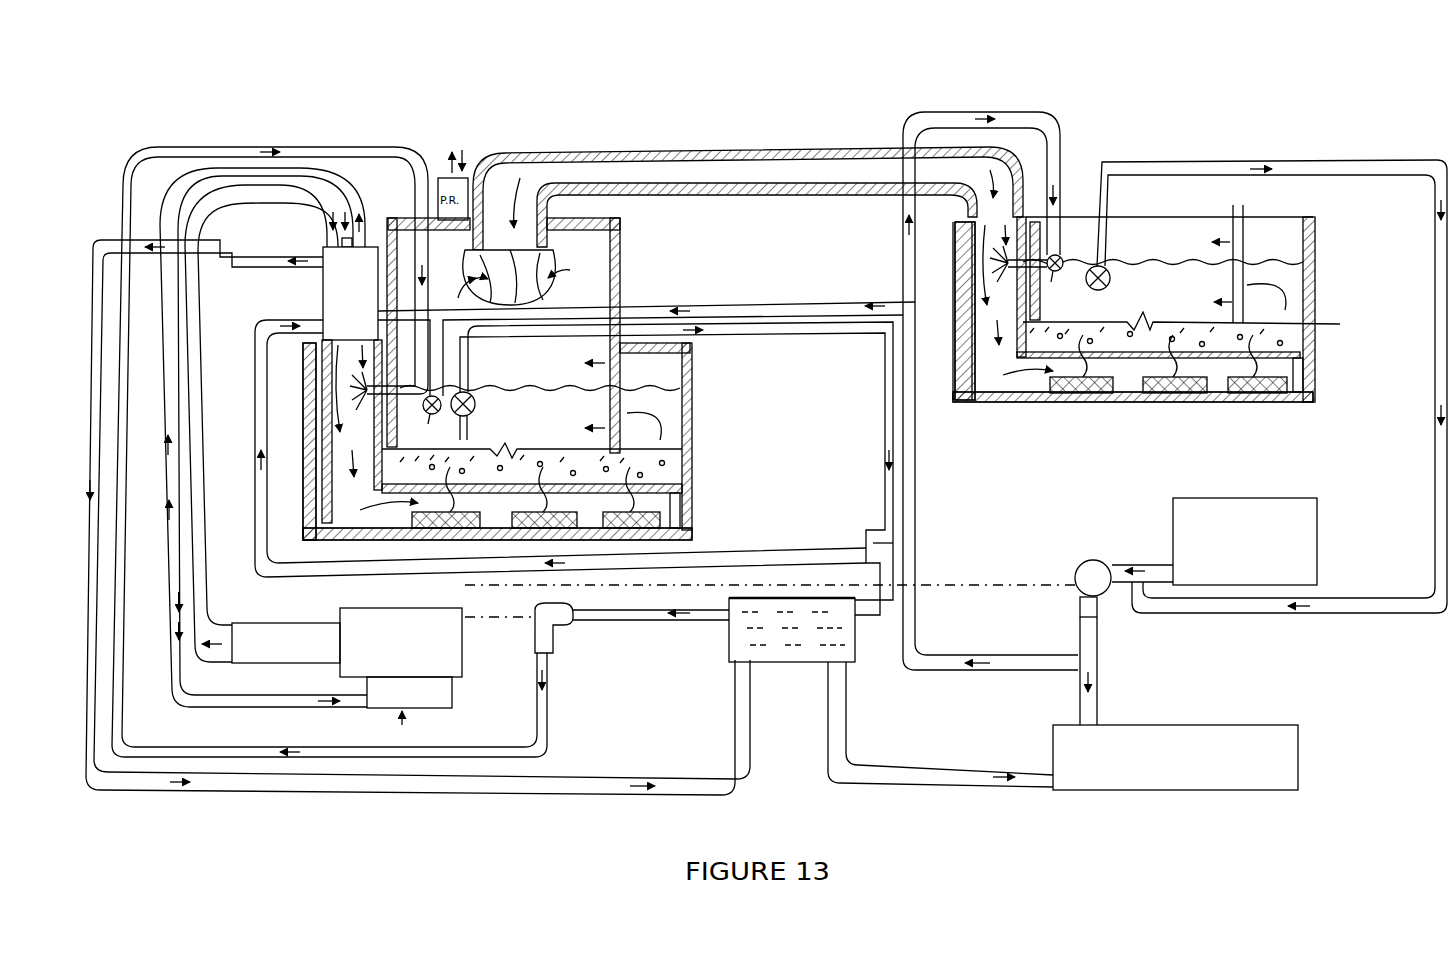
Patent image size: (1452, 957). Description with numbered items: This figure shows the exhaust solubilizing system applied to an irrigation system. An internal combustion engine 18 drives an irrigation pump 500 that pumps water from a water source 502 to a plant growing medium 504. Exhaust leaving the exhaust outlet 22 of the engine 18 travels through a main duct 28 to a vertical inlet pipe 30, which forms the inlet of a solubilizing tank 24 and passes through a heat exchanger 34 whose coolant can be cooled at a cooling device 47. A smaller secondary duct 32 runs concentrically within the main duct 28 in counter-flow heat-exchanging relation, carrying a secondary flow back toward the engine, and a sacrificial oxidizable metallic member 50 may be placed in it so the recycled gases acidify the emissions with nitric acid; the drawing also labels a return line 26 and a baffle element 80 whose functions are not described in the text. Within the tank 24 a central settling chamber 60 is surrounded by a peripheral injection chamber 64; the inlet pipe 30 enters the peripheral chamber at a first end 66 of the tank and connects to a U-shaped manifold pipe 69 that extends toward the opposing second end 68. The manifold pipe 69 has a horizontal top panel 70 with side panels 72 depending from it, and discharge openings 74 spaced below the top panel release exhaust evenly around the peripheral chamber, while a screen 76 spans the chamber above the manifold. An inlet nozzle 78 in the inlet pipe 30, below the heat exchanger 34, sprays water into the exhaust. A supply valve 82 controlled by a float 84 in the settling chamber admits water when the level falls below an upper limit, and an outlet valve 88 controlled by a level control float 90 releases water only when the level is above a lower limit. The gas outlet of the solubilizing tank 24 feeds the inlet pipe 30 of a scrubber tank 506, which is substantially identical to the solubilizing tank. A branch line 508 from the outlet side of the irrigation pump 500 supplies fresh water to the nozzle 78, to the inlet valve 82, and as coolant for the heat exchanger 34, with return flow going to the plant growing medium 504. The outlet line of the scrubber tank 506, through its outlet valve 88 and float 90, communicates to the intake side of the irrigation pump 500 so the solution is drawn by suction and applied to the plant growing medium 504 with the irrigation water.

The internal combustion engine 18 is at (376, 614).
The exhaust outlet 22 is at (289, 623).
The solubilizing tank 24 is at (770, 376).
The return pipe 26 is at (348, 752).
The main duct 28 is at (263, 437).
The vertical inlet pipe 30 is at (317, 406).
The secondary duct 32 is at (243, 190).
The heat exchanger 34 is at (317, 290).
The cooling device 47 is at (772, 664).
The sacrificial oxidizable metallic member 50 is at (176, 603).
The central settling chamber 60 is at (851, 310).
The peripheral injection chamber 64 is at (697, 368).
The first end 66 is at (303, 530).
The second end 68 is at (700, 507).
The manifold pipe 69 is at (380, 516).
The top panel 70 is at (640, 470).
The side panels 72 is at (690, 490).
The discharge openings 74 is at (580, 530).
The screen 76 is at (700, 462).
The inlet nozzle 78 is at (674, 370).
The baffle 80 is at (610, 427).
The supply valve 82 is at (753, 350).
The float 84 is at (753, 350).
The outlet valve 88 is at (809, 353).
The level control float 90 is at (809, 353).
The irrigation pump 500 is at (1088, 562).
The water source 502 is at (1208, 498).
The plant growing medium 504 is at (1195, 724).
The scrubber tank 506 is at (1081, 168).
The branch line 508 is at (965, 655).